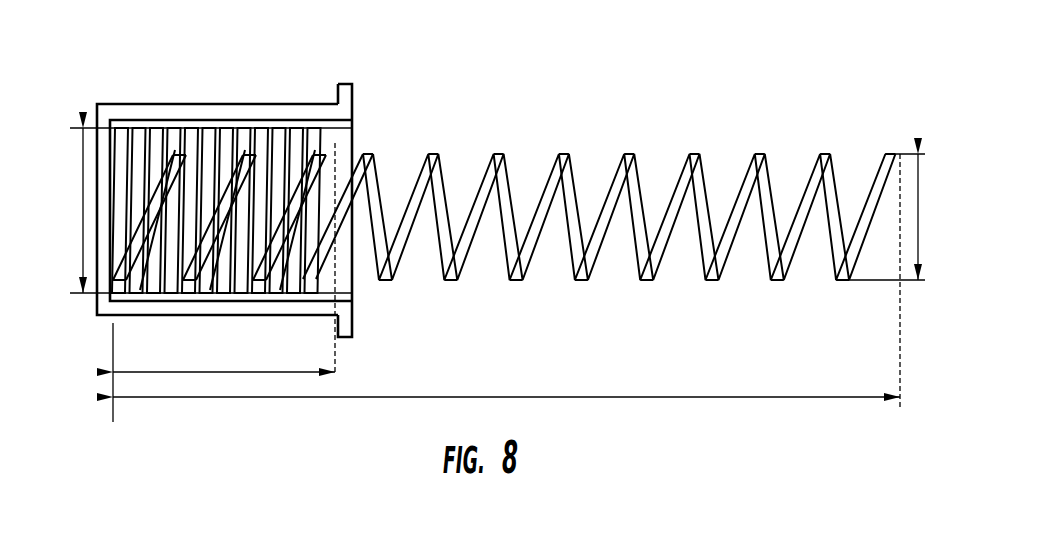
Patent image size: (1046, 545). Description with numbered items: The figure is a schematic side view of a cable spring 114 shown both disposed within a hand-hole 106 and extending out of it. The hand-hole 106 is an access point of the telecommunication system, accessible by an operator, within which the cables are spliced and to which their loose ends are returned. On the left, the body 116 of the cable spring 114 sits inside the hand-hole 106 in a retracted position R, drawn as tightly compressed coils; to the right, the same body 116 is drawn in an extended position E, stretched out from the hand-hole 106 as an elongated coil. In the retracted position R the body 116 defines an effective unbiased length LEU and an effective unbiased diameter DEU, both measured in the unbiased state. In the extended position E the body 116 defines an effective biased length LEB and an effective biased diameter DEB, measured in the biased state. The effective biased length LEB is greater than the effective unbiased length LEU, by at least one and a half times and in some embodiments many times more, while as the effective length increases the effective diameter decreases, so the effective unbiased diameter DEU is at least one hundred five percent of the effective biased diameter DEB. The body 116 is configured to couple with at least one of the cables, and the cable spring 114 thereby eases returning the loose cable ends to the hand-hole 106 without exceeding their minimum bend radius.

The hand-hole 106 is at (195, 104).
The retracted position R is at (244, 126).
The body 116 is at (288, 135).
The cable spring 114 is at (328, 148).
The extended position E is at (630, 153).
The effective unbiased diameter DEU is at (83, 223).
The effective biased diameter DEB is at (918, 223).
The effective unbiased length LEU is at (247, 368).
The effective biased length LEB is at (773, 397).